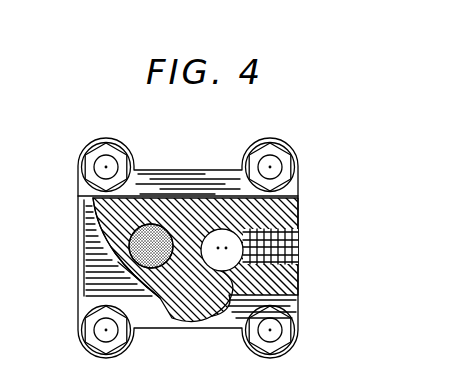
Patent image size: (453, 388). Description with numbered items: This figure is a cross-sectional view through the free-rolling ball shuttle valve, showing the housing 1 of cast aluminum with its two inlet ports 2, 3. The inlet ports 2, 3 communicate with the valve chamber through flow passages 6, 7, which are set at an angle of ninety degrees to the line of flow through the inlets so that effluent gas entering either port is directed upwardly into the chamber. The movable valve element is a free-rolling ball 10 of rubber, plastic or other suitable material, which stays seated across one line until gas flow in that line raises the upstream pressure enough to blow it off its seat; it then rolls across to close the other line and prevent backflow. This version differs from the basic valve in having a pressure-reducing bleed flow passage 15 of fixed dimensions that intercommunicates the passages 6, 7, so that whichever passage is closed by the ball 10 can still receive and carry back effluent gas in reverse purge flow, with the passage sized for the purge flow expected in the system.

The housing 1 is at (96, 278).
The inlet port 2 is at (104, 244).
The inlet port 3 is at (290, 252).
The flow passage 6 is at (157, 232).
The flow passage 7 is at (223, 245).
The free-rolling ball 10 is at (138, 228).
The pressure-reducing bleed flow passage 15 is at (160, 316).